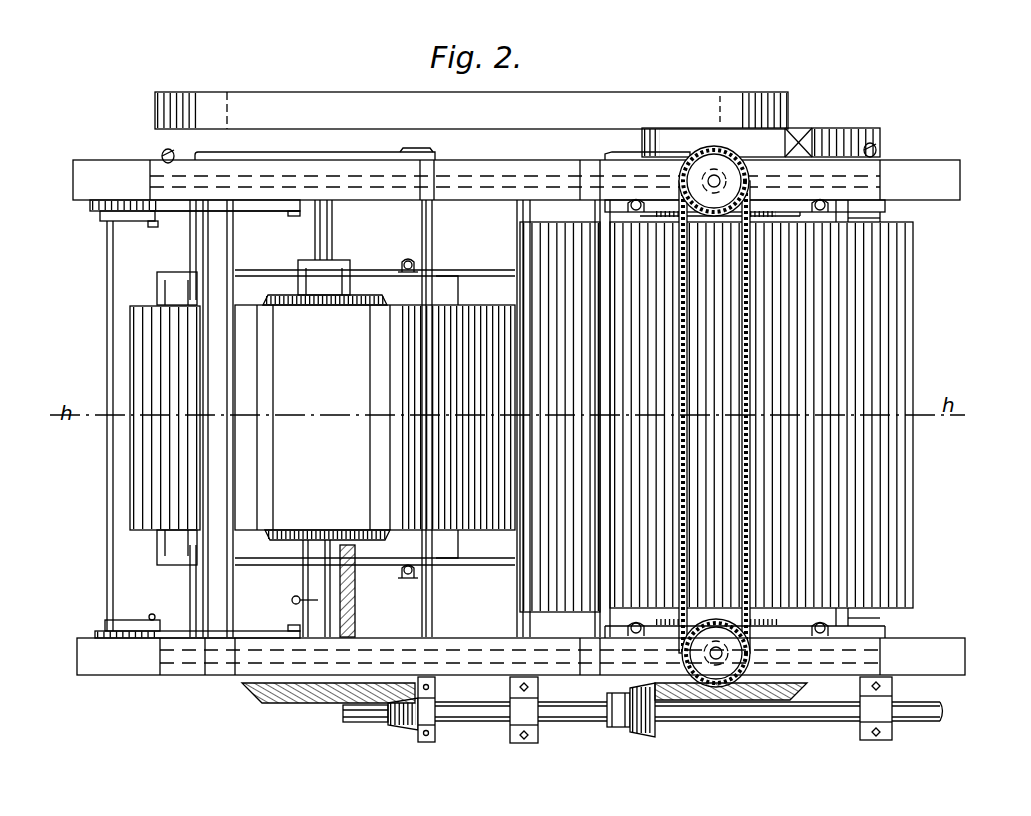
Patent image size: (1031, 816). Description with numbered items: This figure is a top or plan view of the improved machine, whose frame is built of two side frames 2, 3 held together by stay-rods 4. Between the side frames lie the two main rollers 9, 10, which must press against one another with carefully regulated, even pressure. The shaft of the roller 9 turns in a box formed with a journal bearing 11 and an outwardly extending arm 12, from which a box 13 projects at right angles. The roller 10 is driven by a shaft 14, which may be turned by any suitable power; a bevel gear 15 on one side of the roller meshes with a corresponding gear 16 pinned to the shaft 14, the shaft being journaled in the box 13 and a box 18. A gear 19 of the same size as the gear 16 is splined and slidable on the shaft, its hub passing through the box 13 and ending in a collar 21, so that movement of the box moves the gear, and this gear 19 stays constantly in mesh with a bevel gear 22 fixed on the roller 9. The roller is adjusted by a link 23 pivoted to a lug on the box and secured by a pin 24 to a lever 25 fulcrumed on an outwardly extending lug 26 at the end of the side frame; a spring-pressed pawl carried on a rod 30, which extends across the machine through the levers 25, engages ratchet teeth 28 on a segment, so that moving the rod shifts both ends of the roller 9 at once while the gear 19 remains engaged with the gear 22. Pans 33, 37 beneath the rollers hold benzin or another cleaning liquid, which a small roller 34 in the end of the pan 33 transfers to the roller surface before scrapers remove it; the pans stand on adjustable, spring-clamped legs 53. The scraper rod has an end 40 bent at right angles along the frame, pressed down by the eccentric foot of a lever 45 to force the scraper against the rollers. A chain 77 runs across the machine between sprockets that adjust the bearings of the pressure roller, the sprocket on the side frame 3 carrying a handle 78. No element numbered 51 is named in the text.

The side frame 2 is at (945, 172).
The side frame 3 is at (955, 652).
The stay-rod 4 is at (524, 210).
The roller 9 is at (156, 487).
The roller 10 is at (888, 326).
The journal bearing 11 is at (586, 627).
The outwardly extending arm 12 is at (714, 416).
The box 13 is at (427, 742).
The shaft 14 is at (943, 712).
The bevel gear 15 is at (790, 690).
The bevel gear 16 is at (636, 732).
The box 18 is at (530, 743).
The gear 19 is at (405, 722).
The collar 21 is at (440, 701).
The bevel gear 22 is at (266, 704).
The link 23 is at (272, 212).
The pin 24 is at (166, 225).
The lever 25 is at (136, 221).
The lug 26 is at (130, 626).
The teeth 28 is at (95, 208).
The rod 30 is at (107, 297).
The pan 33 is at (372, 272).
The small roller 34 is at (178, 549).
The pan 37 is at (873, 217).
The end of rod 40 is at (272, 158).
The lever 45 is at (165, 152).
The bracket 51 is at (393, 417).
The leg 53 is at (608, 421).
The chain 77 is at (750, 458).
The handle 78 is at (712, 690).